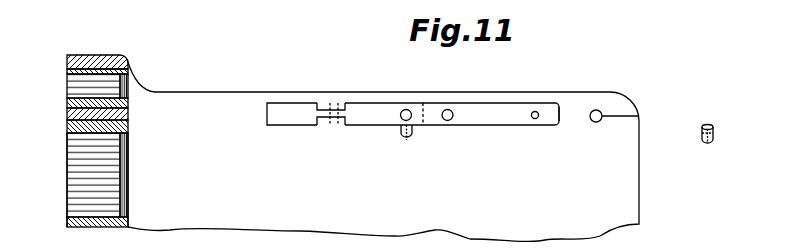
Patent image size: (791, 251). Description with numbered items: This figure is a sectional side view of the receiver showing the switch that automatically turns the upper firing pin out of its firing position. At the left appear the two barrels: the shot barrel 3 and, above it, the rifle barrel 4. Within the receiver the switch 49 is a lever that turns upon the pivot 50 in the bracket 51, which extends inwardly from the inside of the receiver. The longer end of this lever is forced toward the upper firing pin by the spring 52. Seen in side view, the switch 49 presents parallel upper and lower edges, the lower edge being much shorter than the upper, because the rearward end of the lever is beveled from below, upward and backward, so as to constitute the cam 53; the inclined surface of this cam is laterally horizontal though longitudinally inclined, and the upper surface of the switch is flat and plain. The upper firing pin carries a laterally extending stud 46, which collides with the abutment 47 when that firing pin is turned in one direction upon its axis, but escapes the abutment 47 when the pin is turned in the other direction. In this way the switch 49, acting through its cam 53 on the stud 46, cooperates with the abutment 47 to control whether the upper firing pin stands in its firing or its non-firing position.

The shot barrel 3 is at (92, 180).
The rifle barrel 4 is at (68, 84).
The laterally extending stud 46 is at (405, 109).
The abutment 47 is at (625, 106).
The switch 49 is at (413, 114).
The pivot 50 is at (332, 105).
The bracket 51 is at (322, 105).
The spring 52 is at (519, 116).
The cam 53 is at (424, 104).